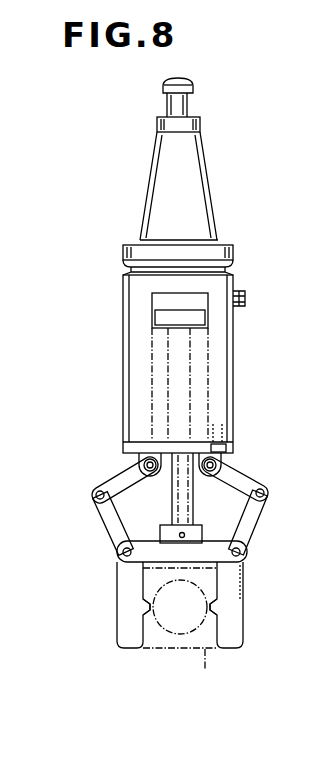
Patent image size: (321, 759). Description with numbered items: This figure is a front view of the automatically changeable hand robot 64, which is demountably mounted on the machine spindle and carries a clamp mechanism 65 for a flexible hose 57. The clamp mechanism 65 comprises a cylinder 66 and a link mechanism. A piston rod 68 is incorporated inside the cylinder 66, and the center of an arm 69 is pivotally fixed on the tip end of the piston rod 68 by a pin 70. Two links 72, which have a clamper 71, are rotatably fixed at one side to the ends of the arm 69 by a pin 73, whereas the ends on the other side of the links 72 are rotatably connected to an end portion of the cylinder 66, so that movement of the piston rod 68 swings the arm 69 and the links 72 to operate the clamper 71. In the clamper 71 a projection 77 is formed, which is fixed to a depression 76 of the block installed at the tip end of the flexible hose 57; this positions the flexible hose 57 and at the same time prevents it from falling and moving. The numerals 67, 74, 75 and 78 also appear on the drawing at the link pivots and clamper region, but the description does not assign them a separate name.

The flexible hose 57 is at (180, 635).
The hand robot 64 is at (243, 340).
The clamp mechanism 65 is at (100, 538).
The cylinder 66 is at (156, 359).
The gripper arm assembly 67 is at (175, 456).
The piston rod 68 is at (193, 502).
The arm 69 is at (231, 533).
The pin 70 is at (184, 537).
The clamper 71 is at (122, 603).
The links 72 is at (110, 518).
The pin 73 is at (127, 556).
The pivot pin 74 is at (122, 477).
The upper link 75 is at (126, 448).
The depression 76 is at (145, 649).
The projection 77 is at (143, 608).
The slot 78 is at (160, 645).